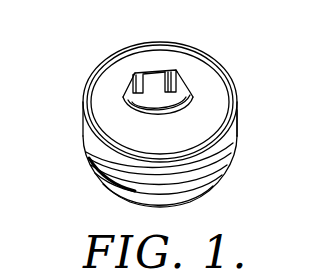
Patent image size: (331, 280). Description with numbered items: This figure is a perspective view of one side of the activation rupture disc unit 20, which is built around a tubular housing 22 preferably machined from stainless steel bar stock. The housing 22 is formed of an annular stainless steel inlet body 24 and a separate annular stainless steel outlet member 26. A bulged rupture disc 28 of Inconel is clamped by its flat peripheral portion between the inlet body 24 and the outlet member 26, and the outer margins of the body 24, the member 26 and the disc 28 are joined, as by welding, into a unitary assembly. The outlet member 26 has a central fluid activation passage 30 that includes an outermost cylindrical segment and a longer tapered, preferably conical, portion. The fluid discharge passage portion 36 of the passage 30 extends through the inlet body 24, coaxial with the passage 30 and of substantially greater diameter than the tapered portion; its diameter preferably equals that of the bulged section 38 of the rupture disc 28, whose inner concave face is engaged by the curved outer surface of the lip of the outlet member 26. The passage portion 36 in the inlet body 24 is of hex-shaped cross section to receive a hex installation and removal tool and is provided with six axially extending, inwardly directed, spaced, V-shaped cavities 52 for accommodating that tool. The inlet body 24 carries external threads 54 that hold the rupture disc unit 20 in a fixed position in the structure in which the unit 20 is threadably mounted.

The activation rupture disc unit 20 is at (233, 51).
The tubular housing 22 is at (241, 105).
The annular inlet body 24 is at (88, 118).
The annular outlet member 26 is at (197, 190).
The bulged rupture disc 28 is at (130, 190).
The central fluid activation passage 30 is at (128, 88).
The fluid discharge passage portion 36 is at (152, 70).
The bulged section 38 is at (172, 117).
The V-shaped cavities 52 is at (169, 71).
The external threads 54 is at (233, 140).